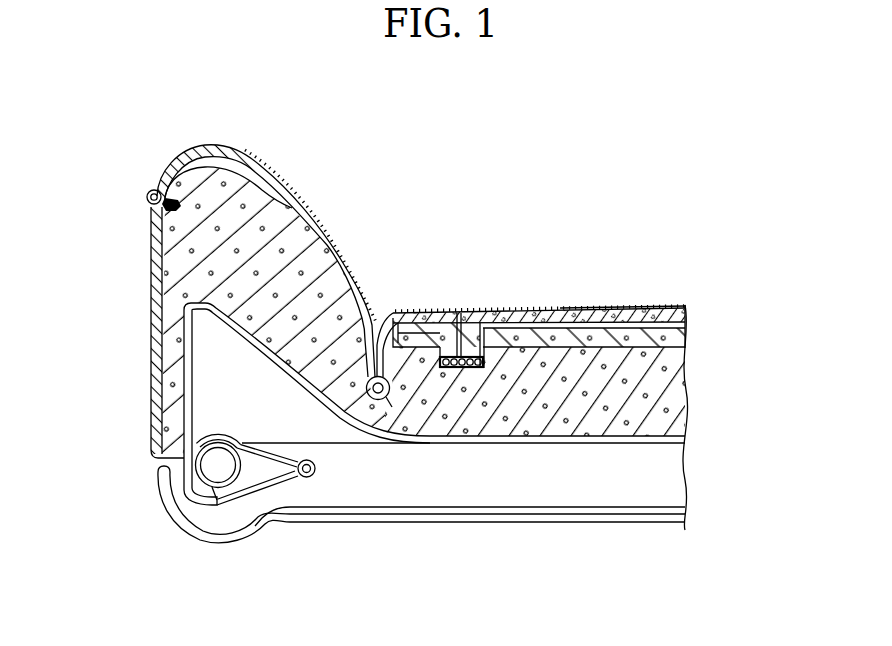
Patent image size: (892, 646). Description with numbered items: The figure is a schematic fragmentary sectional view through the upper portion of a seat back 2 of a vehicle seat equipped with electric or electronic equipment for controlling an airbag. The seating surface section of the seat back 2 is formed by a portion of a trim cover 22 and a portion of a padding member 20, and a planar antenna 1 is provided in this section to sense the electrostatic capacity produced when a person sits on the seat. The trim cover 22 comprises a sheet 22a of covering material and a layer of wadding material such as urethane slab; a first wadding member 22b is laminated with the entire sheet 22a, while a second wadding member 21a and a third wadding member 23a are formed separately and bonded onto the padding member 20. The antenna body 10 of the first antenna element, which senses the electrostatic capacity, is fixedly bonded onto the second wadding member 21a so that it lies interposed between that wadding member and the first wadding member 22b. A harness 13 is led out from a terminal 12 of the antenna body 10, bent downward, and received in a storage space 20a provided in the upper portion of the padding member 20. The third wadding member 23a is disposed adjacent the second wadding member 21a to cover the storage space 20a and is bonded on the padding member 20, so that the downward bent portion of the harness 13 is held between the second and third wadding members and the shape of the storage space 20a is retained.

The planar antenna 1 is at (693, 323).
The seat back 2 is at (645, 303).
The antenna body 10 is at (558, 312).
The terminal 12 is at (458, 314).
The harness 13 is at (452, 368).
The padding member 20 is at (527, 432).
The storage space 20a is at (438, 347).
The second wadding member 21a is at (688, 338).
The trim cover 22 is at (481, 307).
The sheet of covering material 22a is at (613, 310).
The first wadding member 22b is at (687, 316).
The third wadding member 23a is at (423, 313).